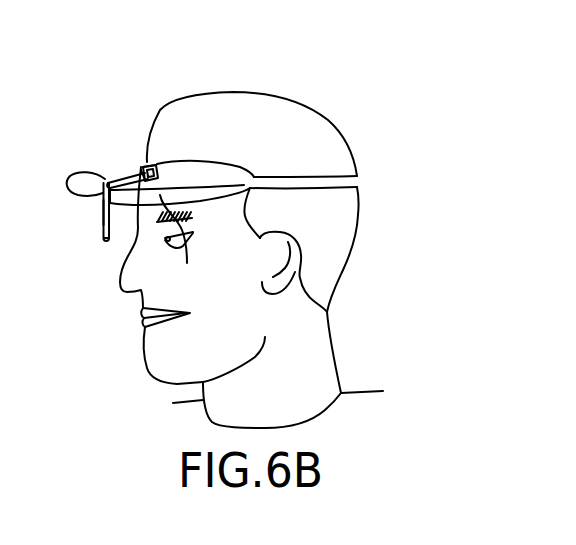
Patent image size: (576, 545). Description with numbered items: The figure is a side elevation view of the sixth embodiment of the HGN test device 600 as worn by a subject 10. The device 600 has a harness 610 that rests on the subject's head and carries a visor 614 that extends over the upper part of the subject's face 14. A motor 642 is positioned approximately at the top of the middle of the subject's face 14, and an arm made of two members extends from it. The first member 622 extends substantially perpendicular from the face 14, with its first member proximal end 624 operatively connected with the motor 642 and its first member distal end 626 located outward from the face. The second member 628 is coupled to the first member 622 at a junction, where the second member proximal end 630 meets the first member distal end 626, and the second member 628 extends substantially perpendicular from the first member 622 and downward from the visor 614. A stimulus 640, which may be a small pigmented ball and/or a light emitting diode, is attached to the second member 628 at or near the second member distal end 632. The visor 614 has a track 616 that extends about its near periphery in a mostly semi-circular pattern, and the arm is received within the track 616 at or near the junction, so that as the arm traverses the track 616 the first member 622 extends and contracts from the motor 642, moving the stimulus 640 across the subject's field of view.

The subject 10 is at (355, 282).
The face 14 is at (149, 164).
The HGN test device 600 is at (338, 72).
The harness 610 is at (346, 175).
The visor 614 is at (208, 195).
The track 616 is at (142, 283).
The first member 622 is at (141, 171).
The first member proximal end 624 is at (122, 168).
The first member distal end 626 is at (80, 171).
The second member 628 is at (103, 207).
The second member proximal end 630 is at (103, 192).
The second member distal end 632 is at (106, 241).
The stimulus 640 is at (103, 228).
The motor 642 is at (143, 165).